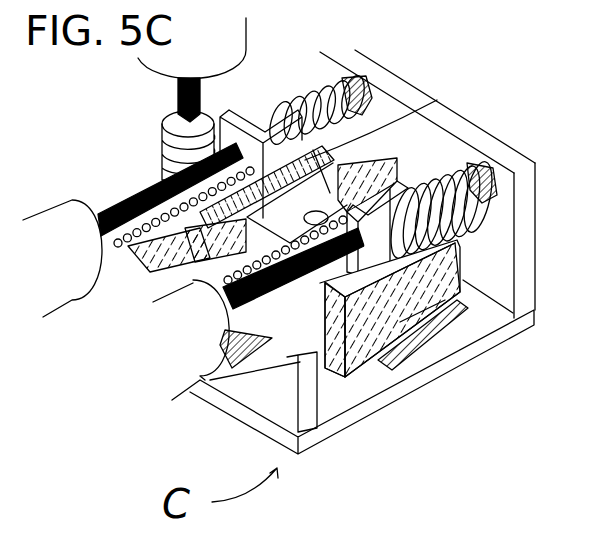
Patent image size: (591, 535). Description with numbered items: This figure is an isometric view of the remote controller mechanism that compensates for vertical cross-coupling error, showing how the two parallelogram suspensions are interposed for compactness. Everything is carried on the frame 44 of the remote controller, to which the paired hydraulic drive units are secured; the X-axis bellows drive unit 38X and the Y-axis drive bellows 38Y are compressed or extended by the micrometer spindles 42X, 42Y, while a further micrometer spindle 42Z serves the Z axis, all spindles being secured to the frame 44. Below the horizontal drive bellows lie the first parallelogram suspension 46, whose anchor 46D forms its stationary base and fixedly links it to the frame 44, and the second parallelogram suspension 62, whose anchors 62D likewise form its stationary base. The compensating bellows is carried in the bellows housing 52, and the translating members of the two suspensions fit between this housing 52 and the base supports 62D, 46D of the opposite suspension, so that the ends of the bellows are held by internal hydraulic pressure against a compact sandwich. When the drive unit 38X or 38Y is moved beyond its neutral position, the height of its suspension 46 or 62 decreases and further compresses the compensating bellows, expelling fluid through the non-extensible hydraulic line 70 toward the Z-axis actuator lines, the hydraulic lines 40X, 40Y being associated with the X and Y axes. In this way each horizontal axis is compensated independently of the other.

The frame 44 is at (345, 423).
The X-direction frame member 40X is at (387, 65).
The Y-direction frame member 40Y is at (513, 145).
The bellows housing 52 is at (437, 100).
The micrometer spindle 42Z is at (178, 97).
The anchor 62D is at (147, 173).
The micrometer spindle 42X is at (127, 197).
The non-extensible hydraulic line 70 is at (236, 102).
The X-axis bellows drive unit 38X is at (312, 150).
The first parallelogram suspension 46 is at (147, 270).
The micrometer spindle 42Y is at (227, 310).
The Y-axis bellows drive unit 38Y is at (425, 205).
The anchor 46D is at (437, 335).
The second parallelogram suspension 62 is at (407, 348).